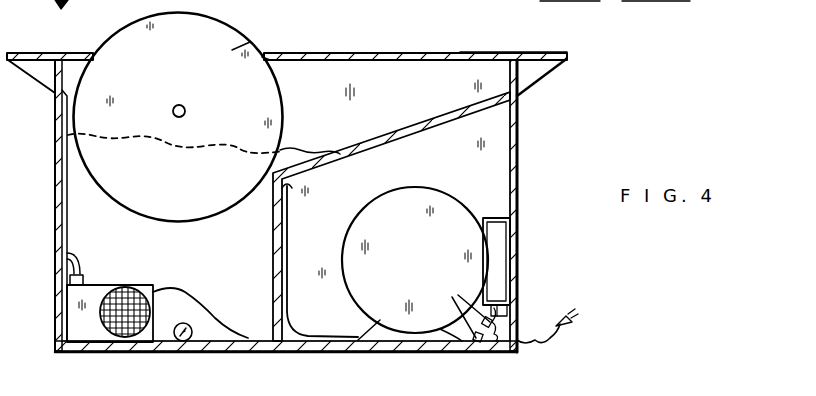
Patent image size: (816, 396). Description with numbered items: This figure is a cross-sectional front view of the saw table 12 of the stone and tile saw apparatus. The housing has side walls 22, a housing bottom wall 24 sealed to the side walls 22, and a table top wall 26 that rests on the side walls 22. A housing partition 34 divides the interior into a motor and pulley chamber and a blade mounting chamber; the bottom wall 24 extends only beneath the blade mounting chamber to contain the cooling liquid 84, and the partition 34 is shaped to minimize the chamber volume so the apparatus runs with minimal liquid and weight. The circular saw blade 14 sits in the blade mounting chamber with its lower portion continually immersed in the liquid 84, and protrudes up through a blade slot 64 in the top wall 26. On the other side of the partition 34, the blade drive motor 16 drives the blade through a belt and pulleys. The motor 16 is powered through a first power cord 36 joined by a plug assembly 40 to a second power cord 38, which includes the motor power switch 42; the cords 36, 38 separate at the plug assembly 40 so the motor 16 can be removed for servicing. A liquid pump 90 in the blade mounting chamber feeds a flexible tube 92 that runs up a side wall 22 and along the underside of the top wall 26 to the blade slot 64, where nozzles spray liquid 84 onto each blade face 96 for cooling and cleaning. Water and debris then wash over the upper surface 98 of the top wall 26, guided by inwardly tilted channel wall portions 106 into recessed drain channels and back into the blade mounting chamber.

The saw table 12 is at (572, 82).
The saw blade 14 is at (293, 92).
The blade drive motor 16 is at (362, 216).
The housing side walls 22 is at (518, 140).
The housing bottom wall 24 is at (443, 0).
The table top wall 26 is at (392, 53).
The housing partition 34 is at (410, 128).
The first power cord 36 is at (516, 312).
The second power cord 38 is at (332, 337).
The plug assembly 40 is at (455, 285).
The motor power switch 42 is at (516, 252).
The blade slot 64 is at (265, 56).
The cooling liquid 84 is at (305, 150).
The liquid pump 90 is at (106, 285).
The flexible tube 92 is at (206, 300).
The blade face 96 is at (240, 46).
The upper surface of top wall 98 is at (468, 56).
The inwardly tilted channel wall portions 106 is at (530, 80).